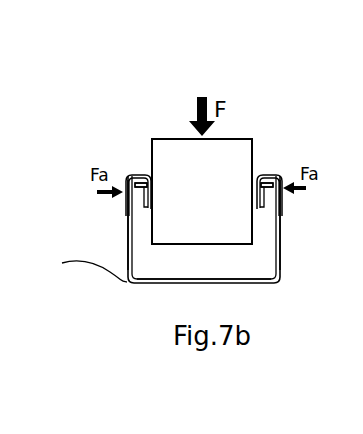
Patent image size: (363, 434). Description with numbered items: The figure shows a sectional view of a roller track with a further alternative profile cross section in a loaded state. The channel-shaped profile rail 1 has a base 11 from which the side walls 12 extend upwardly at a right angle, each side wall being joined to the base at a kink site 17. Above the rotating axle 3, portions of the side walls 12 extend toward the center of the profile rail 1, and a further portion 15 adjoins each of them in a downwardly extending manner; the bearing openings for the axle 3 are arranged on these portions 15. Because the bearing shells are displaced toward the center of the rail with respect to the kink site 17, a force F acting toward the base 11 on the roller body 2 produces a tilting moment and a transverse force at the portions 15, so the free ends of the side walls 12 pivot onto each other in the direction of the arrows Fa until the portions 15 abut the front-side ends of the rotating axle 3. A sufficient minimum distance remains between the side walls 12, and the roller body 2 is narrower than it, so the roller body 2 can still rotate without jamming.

The profile rail 1 is at (297, 272).
The roller body 2 is at (171, 147).
The rotating axle 3 is at (270, 177).
The base 11 is at (183, 281).
The side walls 12 is at (128, 231).
The further portion 15 is at (284, 182).
The kink site 17 is at (78, 265).